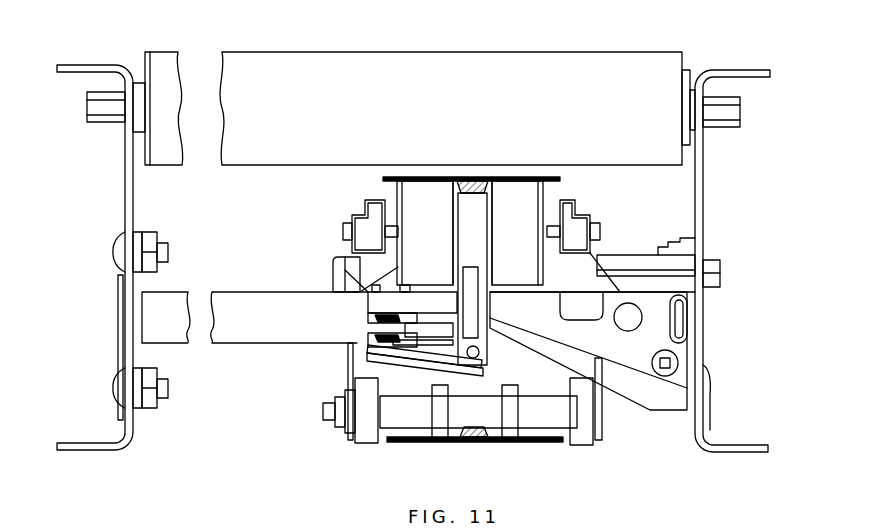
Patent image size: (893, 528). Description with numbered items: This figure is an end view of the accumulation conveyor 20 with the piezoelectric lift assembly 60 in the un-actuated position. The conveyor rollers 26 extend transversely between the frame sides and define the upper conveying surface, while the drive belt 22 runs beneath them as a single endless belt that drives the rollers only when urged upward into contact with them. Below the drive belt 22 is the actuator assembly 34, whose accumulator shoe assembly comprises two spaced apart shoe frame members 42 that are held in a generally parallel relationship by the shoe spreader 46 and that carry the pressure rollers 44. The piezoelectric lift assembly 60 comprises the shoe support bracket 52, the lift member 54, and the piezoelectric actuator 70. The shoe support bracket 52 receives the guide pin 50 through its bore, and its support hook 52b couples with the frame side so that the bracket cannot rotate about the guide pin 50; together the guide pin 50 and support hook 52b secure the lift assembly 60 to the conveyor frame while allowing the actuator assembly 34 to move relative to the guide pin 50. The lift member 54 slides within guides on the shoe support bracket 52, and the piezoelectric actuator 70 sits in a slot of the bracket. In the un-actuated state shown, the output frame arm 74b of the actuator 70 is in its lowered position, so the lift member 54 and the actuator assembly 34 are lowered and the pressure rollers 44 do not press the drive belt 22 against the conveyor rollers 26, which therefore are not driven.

The accumulation conveyor 20 is at (150, 36).
The drive belt 22 is at (472, 178).
The conveyor roller 26 is at (463, 75).
The actuator assembly 34 is at (282, 195).
The shoe frame member 42 is at (587, 205).
The pressure roller 44 is at (457, 273).
The shoe spreader 46 is at (362, 296).
The guide pin 50 is at (337, 268).
The shoe support bracket 52 is at (620, 350).
The support hook 52b is at (705, 365).
The lift member 54 is at (490, 358).
The piezoelectric lift assembly 60 is at (728, 423).
The piezoelectric actuator 70 is at (352, 355).
The output frame arm 74b is at (423, 363).